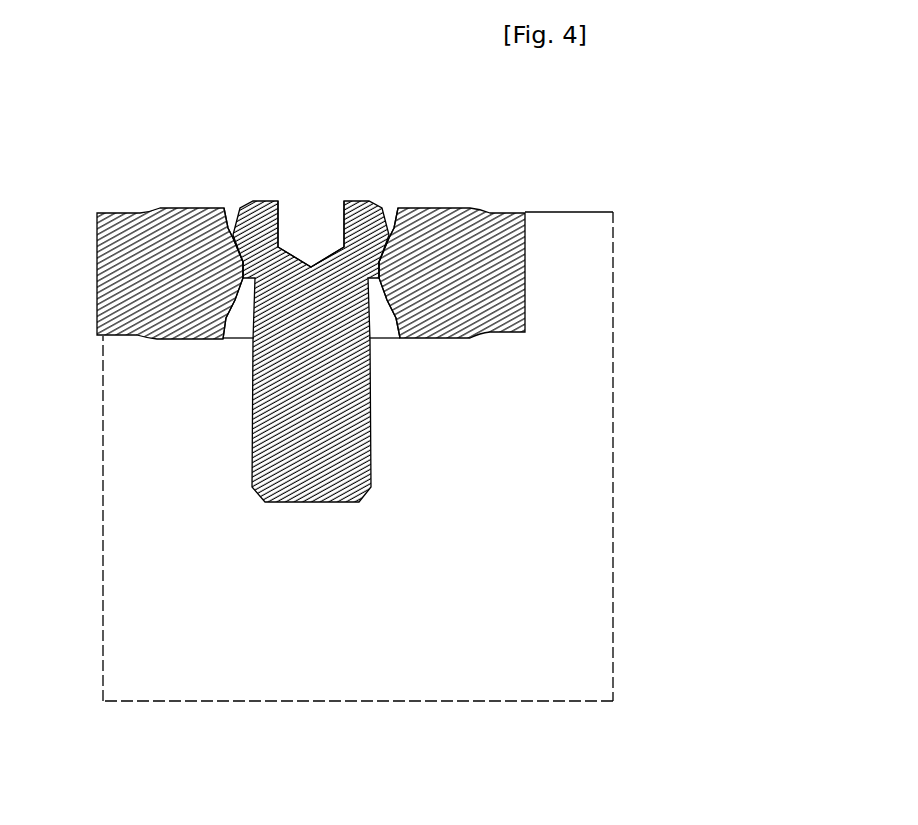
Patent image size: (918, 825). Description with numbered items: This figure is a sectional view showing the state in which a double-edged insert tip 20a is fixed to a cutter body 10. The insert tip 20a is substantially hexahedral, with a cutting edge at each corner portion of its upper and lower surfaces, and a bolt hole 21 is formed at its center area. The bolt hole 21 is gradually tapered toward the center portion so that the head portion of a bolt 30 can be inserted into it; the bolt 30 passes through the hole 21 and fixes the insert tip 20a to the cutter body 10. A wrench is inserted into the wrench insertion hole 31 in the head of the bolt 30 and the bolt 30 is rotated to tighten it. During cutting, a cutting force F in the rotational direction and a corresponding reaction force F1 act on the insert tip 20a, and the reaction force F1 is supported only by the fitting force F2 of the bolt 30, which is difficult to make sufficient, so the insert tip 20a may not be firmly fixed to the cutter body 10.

The cutter body 10 is at (600, 548).
The double-edged insert tip 20a is at (448, 221).
The bolt hole 21 is at (233, 330).
The bolt 30 is at (370, 219).
The wrench insertion hole 31 is at (287, 217).
The cutting force F is at (109, 207).
The reaction force F1 is at (122, 340).
The fitting force F2 is at (311, 194).